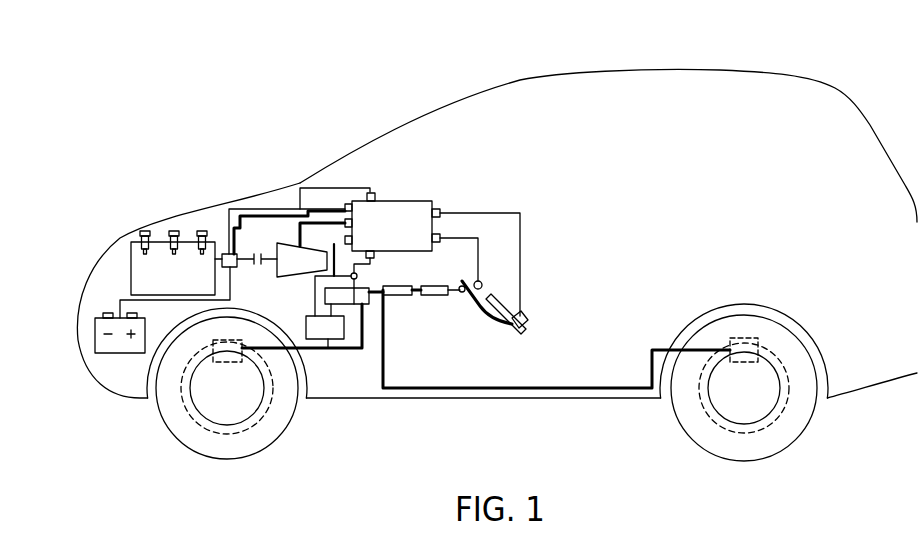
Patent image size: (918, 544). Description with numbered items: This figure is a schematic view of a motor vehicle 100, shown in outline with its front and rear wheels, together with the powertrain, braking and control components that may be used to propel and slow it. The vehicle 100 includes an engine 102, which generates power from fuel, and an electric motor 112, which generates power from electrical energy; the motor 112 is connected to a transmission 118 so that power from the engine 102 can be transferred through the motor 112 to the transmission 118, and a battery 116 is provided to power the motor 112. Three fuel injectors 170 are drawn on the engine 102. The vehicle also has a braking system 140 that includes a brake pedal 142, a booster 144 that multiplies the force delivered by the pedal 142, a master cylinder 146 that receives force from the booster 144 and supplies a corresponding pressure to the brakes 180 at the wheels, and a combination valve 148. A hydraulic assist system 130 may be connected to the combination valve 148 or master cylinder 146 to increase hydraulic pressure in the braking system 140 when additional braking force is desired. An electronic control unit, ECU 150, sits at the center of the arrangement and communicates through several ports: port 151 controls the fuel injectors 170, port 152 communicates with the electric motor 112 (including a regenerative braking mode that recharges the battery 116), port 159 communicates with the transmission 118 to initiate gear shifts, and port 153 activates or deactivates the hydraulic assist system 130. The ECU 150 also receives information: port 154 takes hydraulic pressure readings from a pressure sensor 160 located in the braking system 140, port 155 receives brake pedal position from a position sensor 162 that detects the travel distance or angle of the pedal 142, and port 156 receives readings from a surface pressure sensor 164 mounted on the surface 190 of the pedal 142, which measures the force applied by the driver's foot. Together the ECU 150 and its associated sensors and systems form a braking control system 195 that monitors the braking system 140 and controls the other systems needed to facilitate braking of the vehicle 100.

The motor vehicle 100 is at (598, 70).
The engine 102 is at (132, 252).
The electric motor 112 is at (226, 254).
The battery 116 is at (117, 353).
The transmission 118 is at (302, 262).
The hydraulic assist system 130 is at (326, 350).
The braking system 140 is at (427, 310).
The brake pedal 142 is at (508, 290).
The booster 144 is at (440, 297).
The master cylinder 146 is at (395, 297).
The combination valve 148 is at (363, 305).
The electronic control unit 150 is at (402, 201).
The port 151 is at (371, 193).
The port 152 is at (345, 222).
The port 153 is at (345, 240).
The port 154 is at (374, 258).
The port 155 is at (440, 238).
The port 156 is at (440, 212).
The port 159 is at (345, 208).
The pressure sensor 160 is at (354, 304).
The position sensor 162 is at (481, 282).
The surface pressure sensor 164 is at (523, 318).
The fuel injectors 170 is at (172, 231).
The brakes 180 is at (229, 378).
The surface 190 is at (527, 334).
The braking control system 195 is at (441, 150).